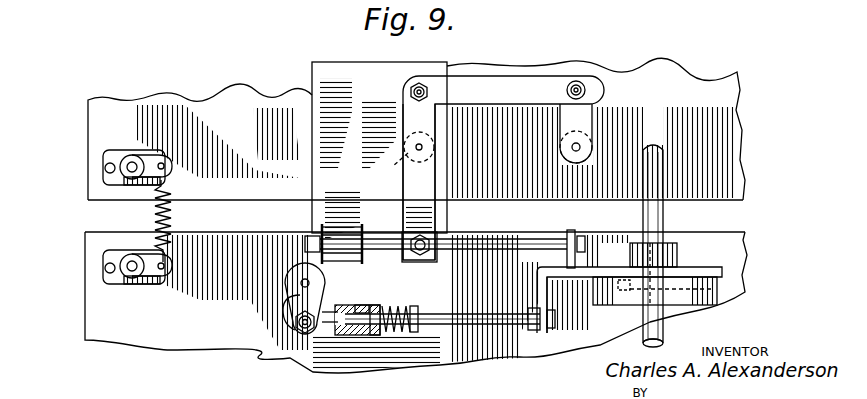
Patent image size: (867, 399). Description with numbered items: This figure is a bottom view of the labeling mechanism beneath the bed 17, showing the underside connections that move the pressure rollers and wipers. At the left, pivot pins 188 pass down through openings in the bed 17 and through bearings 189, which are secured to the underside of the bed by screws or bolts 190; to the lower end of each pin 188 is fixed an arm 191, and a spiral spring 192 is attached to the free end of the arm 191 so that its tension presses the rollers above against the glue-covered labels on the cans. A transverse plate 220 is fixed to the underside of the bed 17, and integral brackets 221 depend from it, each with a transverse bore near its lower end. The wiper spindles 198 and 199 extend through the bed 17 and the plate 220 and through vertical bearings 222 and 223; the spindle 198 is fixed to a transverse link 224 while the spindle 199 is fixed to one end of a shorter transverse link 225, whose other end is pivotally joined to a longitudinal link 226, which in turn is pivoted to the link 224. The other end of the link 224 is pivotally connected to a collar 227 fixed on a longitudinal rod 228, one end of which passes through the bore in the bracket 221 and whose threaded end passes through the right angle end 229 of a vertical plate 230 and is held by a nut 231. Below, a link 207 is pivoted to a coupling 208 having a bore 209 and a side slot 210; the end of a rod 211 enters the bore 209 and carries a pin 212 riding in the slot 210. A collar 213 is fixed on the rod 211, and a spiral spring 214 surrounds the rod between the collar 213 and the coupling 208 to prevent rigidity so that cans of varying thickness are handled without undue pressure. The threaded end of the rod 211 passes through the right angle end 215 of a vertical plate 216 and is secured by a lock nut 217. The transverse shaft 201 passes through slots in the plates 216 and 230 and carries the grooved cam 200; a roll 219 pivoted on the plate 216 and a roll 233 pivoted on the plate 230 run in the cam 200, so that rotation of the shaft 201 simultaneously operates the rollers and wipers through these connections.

The bed 17 is at (727, 91).
The pivot pin 188 is at (130, 270).
The bearing 189 is at (104, 170).
The screw or bolt 190 is at (108, 270).
The arm 191 is at (148, 160).
The spiral spring 192 is at (169, 214).
The wiper spindle 198 is at (416, 147).
The wiper spindle 199 is at (579, 150).
The grooved cam 200 is at (718, 290).
The transverse shaft 201 is at (664, 213).
The link 207 is at (298, 295).
The coupling 208 is at (300, 335).
The bore 209 is at (348, 333).
The slot 210 is at (358, 305).
The rod 211 is at (492, 326).
The pin 212 is at (372, 305).
The collar 213 is at (418, 314).
The spiral spring 214 is at (398, 328).
The right angle end 215 is at (536, 334).
The vertical plate 216 is at (562, 300).
The lock nut 217 is at (556, 330).
The roll 219 is at (708, 305).
The transverse plate 220 is at (322, 75).
The bracket 221 is at (330, 228).
The vertical bearing 222 is at (383, 165).
The vertical bearing 223 is at (585, 128).
The transverse link 224 is at (404, 213).
The shorter transverse link 225 is at (592, 100).
The longitudinal link 226 is at (530, 82).
The collar 227 is at (426, 262).
The longitudinal rod 228 is at (496, 242).
The right angle end 229 is at (572, 233).
The vertical plate 230 is at (700, 270).
The nut 231 is at (584, 238).
The roll 233 is at (623, 280).